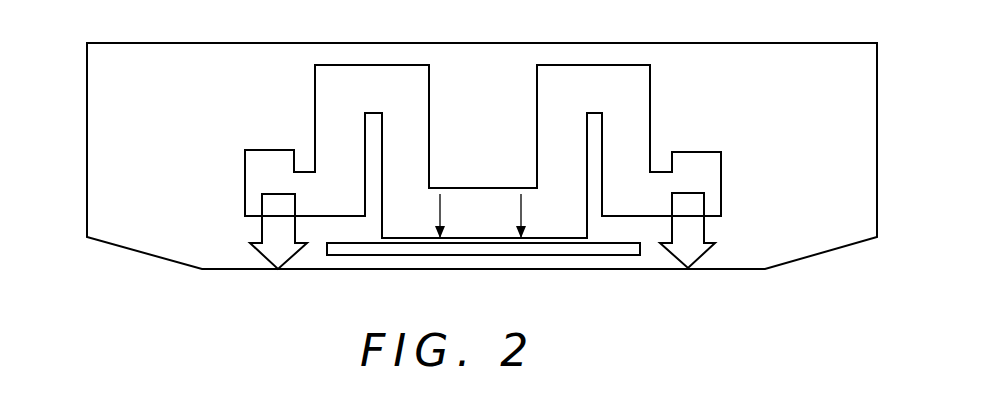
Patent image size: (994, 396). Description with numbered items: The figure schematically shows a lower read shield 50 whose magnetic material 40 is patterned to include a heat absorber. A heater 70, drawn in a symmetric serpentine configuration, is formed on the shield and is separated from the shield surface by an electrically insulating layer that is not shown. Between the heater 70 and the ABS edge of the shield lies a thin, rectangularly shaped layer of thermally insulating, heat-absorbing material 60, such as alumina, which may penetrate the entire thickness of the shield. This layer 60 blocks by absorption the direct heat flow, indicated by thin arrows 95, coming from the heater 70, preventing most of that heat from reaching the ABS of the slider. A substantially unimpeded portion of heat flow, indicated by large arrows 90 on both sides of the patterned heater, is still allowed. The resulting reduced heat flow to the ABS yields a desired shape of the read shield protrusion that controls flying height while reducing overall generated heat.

The magnetic material 40 is at (867, 167).
The lower read shield 50 is at (84, 179).
The layer of thermally insulating material 60 is at (376, 250).
The heater 70 is at (601, 80).
The large arrows 90 is at (270, 243).
The thin arrows 95 is at (519, 208).
The air bearing surface ABS is at (578, 272).